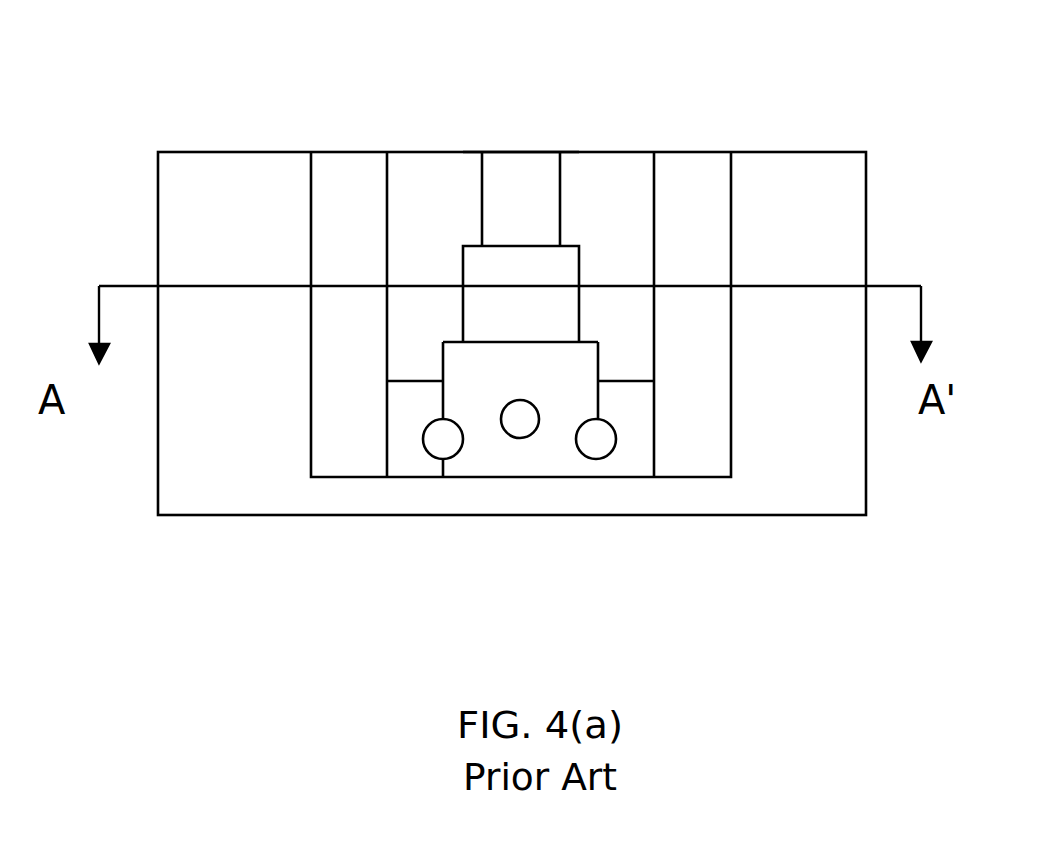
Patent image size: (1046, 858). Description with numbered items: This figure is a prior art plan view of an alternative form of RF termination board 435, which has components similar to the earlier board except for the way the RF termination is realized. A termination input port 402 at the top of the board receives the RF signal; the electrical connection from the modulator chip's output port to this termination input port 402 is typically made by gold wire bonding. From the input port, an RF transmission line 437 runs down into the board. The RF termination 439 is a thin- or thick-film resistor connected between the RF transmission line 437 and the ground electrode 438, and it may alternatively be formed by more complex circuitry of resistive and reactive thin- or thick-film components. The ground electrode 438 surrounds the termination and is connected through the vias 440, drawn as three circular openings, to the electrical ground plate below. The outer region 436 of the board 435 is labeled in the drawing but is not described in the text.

The prior art device 435 is at (516, 331).
The electrode terminal 402 is at (523, 151).
The narrow connecting column 437 is at (521, 218).
The intermediate block region 439 is at (539, 306).
The surrounding frame region 438 is at (348, 439).
The contact holes 440 is at (596, 437).
The substrate 436 is at (805, 495).